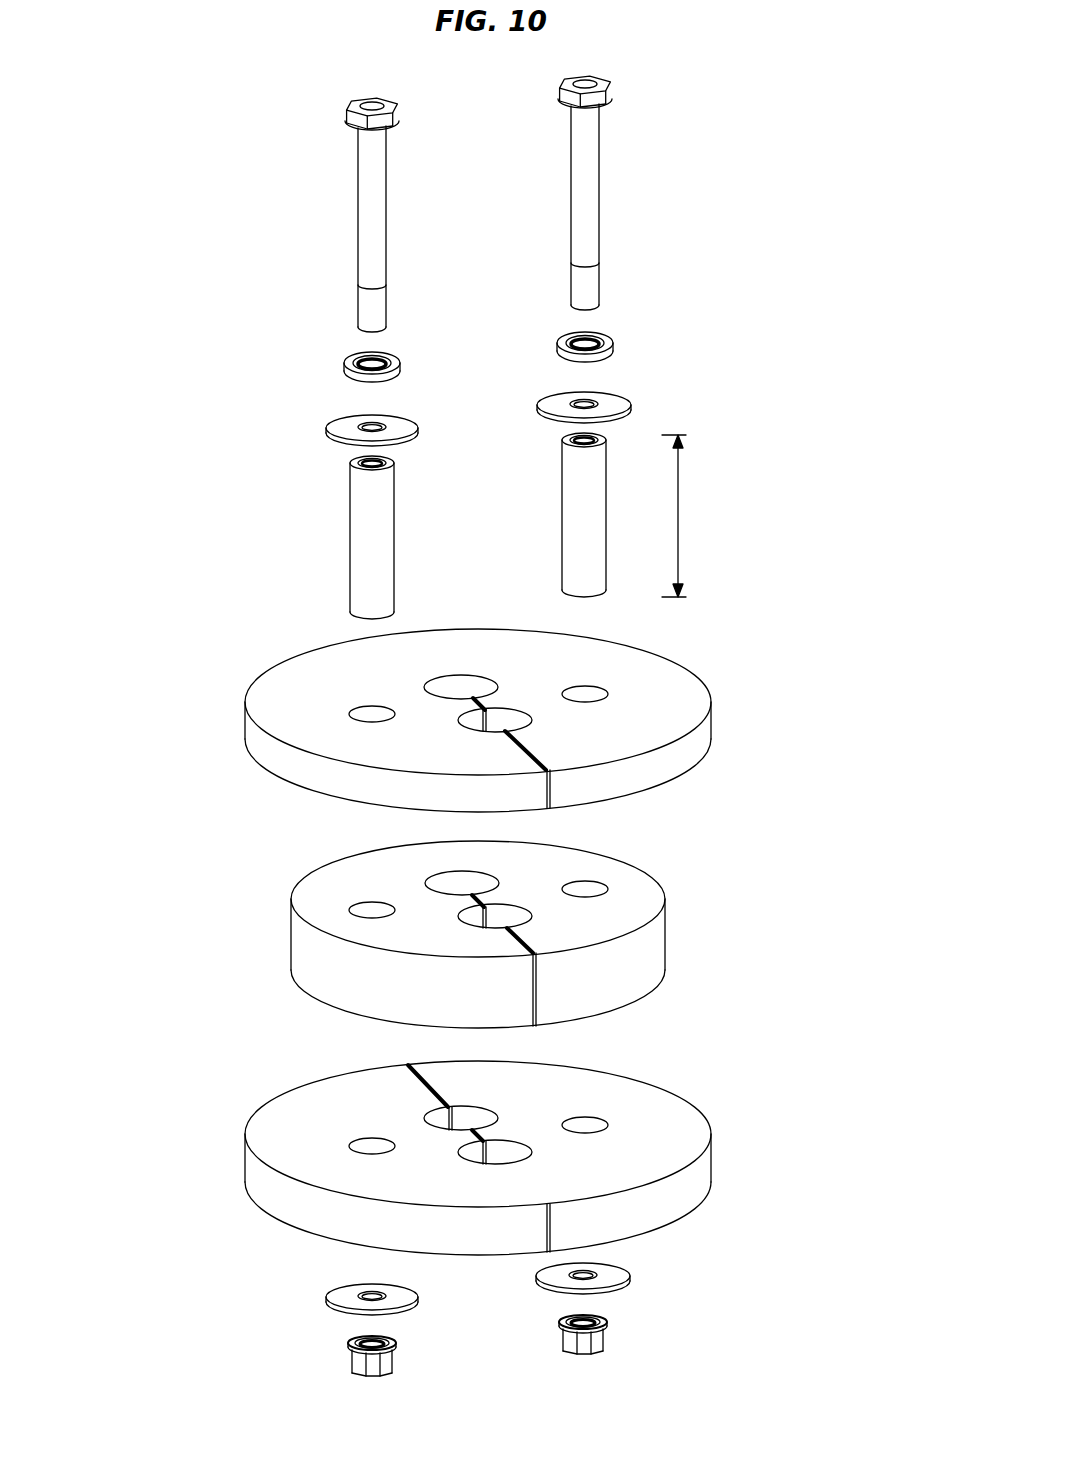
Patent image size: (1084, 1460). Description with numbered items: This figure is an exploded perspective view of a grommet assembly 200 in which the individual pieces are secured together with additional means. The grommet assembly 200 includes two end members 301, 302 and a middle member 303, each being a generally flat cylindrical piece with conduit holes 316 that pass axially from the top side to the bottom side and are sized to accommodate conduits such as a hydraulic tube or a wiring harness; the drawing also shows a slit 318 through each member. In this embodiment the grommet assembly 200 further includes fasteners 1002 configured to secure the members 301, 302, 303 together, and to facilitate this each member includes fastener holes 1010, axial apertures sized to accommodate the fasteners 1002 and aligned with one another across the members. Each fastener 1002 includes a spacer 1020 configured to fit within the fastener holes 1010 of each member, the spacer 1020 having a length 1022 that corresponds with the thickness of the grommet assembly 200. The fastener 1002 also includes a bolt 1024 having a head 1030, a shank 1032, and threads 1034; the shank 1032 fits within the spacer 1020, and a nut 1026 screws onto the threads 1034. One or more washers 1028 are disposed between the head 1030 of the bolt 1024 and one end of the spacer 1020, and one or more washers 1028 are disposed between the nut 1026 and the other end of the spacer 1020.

The grommet assembly 200 is at (805, 140).
The fastener 1002 is at (227, 351).
The bolt 1024 is at (479, 204).
The head 1030 is at (358, 122).
The shank 1032 is at (376, 188).
The threads 1034 is at (378, 311).
The washers 1028 is at (350, 371).
The spacer 1020 is at (362, 540).
The length 1022 is at (678, 504).
The end member 301 is at (680, 660).
The middle member 303 is at (668, 935).
The end member 302 is at (712, 1156).
The fastener holes 1010 is at (358, 704).
The conduit holes 316 is at (461, 674).
The slit 318 is at (546, 790).
The nut 1026 is at (352, 1360).